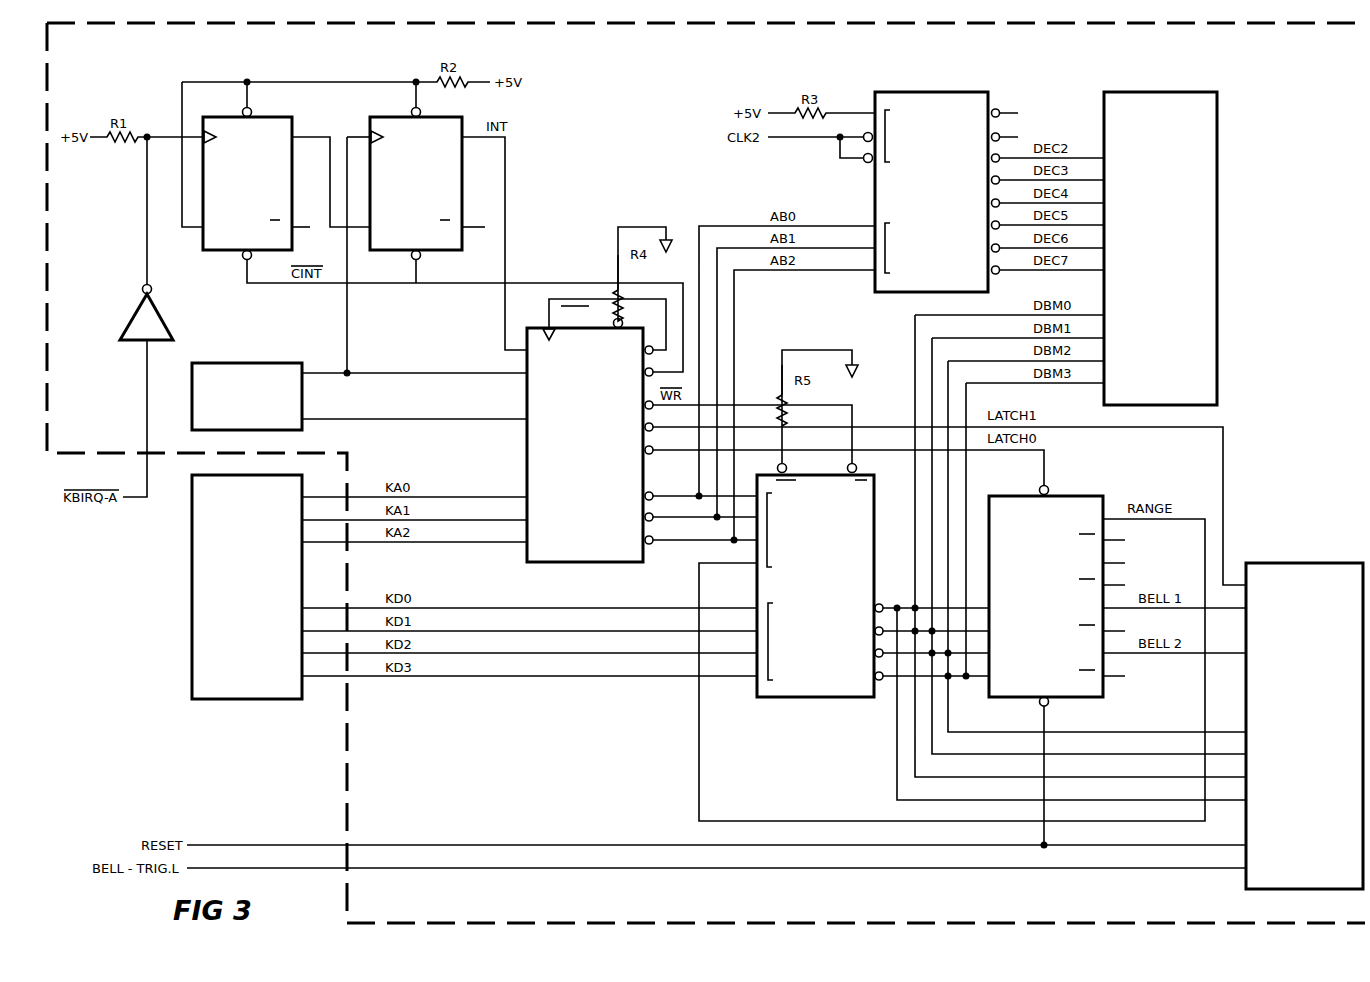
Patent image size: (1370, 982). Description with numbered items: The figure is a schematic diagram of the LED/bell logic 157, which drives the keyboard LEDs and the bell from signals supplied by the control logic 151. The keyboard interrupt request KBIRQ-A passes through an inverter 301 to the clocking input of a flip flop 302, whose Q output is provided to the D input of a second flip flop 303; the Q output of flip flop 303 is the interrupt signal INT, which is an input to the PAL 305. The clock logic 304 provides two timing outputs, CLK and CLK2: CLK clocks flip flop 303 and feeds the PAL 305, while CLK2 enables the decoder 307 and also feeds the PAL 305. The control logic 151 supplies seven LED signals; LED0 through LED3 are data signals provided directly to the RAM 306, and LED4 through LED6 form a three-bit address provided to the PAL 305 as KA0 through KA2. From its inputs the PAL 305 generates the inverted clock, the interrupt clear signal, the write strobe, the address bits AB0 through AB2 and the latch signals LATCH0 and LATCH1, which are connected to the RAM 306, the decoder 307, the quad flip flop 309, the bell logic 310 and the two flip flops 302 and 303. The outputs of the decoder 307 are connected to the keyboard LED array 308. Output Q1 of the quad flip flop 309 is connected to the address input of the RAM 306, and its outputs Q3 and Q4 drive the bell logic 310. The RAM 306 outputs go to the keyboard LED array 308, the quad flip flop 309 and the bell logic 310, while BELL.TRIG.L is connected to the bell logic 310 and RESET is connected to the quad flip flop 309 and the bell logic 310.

The control logic 151 is at (192, 611).
The LED/bell logic 157 is at (585, 923).
The inverter 301 is at (195, 272).
The flip flop 302 is at (222, 250).
The flip flop 303 is at (440, 250).
The clock logic 304 is at (267, 363).
The PAL 305 is at (565, 562).
The RAM 306 is at (795, 697).
The decoder 307 is at (945, 92).
The keyboard LED array 308 is at (1160, 92).
The quad flip flop 309 is at (1072, 496).
The bell logic 310 is at (1293, 563).